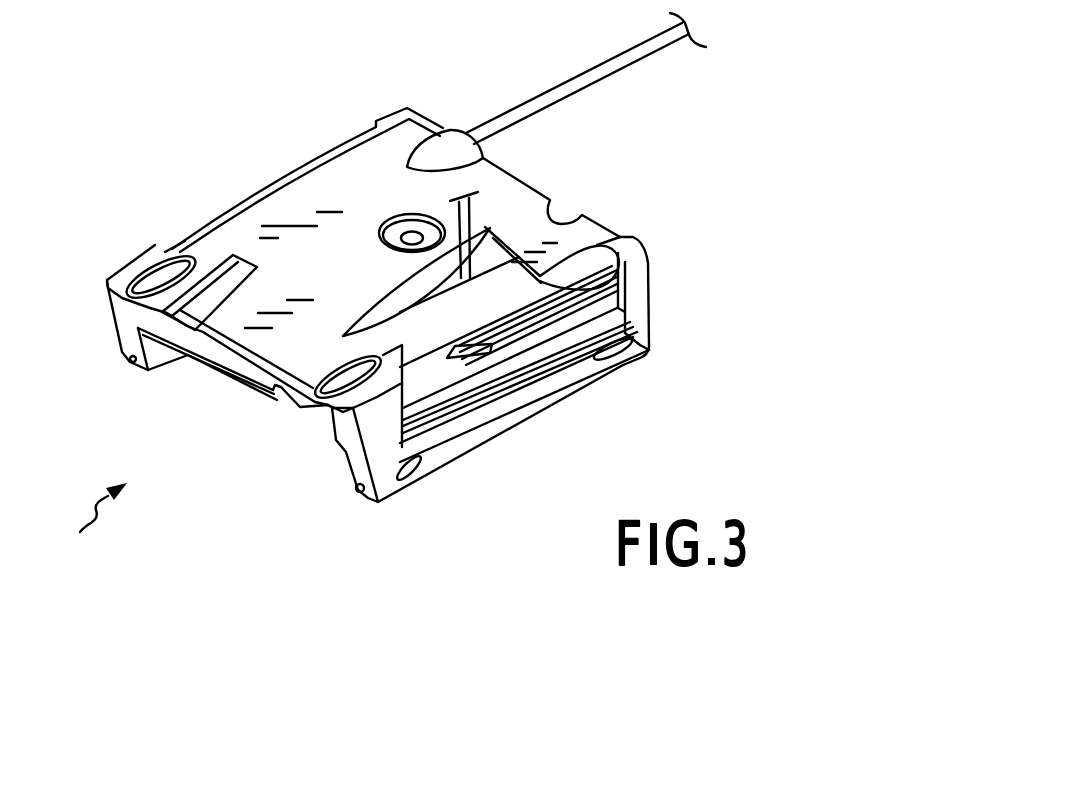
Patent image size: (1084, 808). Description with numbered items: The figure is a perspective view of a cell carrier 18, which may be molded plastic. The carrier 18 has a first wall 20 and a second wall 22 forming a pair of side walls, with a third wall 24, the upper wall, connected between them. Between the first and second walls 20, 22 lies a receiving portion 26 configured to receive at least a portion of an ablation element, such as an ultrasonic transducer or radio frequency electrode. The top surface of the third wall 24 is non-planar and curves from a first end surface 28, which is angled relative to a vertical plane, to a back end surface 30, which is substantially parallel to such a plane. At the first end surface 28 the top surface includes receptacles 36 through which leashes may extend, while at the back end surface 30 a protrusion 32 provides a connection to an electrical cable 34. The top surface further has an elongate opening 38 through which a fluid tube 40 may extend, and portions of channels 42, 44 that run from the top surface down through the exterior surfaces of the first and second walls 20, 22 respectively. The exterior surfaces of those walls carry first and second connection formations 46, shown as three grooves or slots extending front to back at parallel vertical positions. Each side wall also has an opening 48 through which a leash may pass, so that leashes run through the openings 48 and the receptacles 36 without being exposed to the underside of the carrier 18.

The cell carrier 18 is at (363, 96).
The first wall 20 is at (121, 348).
The second wall 22 is at (346, 476).
The third wall 24 is at (191, 360).
The receiving portion 26 is at (88, 521).
The first end surface 28 is at (345, 411).
The back end surface 30 is at (528, 183).
The protrusion 32 is at (443, 140).
The electrical cable 34 is at (573, 81).
The receptacles 36 is at (137, 302).
The elongate opening 38 is at (423, 288).
The fluid tube 40 is at (618, 274).
The channel 42 is at (175, 247).
The channel 44 is at (600, 256).
The connection formations 46 is at (535, 360).
The opening 48 is at (457, 370).